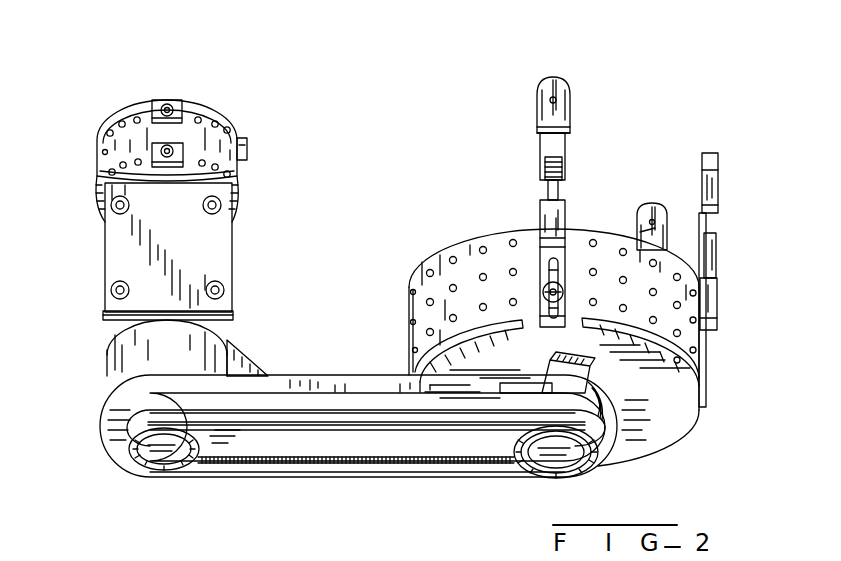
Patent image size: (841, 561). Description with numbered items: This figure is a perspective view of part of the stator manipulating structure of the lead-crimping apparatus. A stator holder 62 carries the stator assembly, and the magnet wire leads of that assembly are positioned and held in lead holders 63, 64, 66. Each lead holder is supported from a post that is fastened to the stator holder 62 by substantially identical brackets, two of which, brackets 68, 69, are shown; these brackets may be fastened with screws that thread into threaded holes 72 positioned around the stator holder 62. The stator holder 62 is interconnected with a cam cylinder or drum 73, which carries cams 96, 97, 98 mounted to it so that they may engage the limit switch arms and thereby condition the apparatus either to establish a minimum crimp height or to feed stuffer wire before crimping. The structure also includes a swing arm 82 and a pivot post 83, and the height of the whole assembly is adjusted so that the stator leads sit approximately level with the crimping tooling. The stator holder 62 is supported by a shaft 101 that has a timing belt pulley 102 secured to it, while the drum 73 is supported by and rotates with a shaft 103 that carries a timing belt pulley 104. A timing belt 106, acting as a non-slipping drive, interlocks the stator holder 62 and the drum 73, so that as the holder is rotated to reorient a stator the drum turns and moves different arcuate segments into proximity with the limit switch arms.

The stator holder 62 is at (470, 235).
The lead holder 63 is at (640, 215).
The lead holder 64 is at (720, 170).
The lead holder 66 is at (545, 85).
The bracket 68 is at (718, 293).
The bracket 69 is at (546, 214).
The threaded holes 72 is at (656, 292).
The drum 73 is at (207, 103).
The swing arm 82 is at (340, 380).
The pivot post 83 is at (124, 364).
The cam 96 is at (160, 103).
The cam 97 is at (180, 150).
The cam 98 is at (250, 145).
The shaft 101 is at (565, 452).
The timing belt pulley 102 is at (530, 468).
The shaft 103 is at (168, 453).
The timing belt pulley 104 is at (188, 467).
The timing belt 106 is at (367, 428).